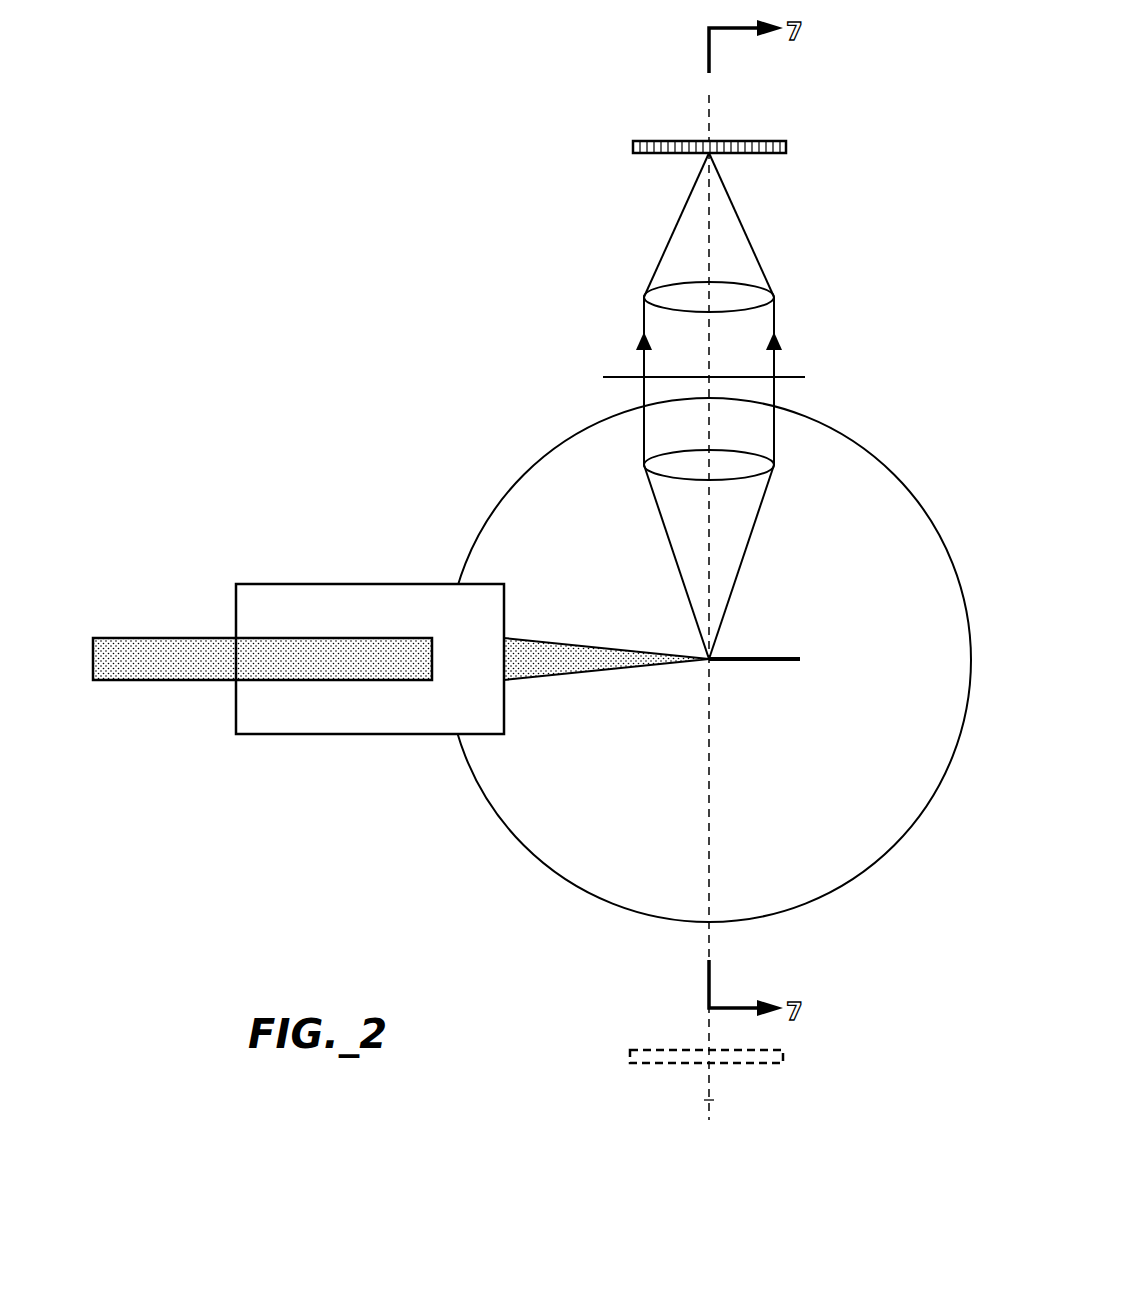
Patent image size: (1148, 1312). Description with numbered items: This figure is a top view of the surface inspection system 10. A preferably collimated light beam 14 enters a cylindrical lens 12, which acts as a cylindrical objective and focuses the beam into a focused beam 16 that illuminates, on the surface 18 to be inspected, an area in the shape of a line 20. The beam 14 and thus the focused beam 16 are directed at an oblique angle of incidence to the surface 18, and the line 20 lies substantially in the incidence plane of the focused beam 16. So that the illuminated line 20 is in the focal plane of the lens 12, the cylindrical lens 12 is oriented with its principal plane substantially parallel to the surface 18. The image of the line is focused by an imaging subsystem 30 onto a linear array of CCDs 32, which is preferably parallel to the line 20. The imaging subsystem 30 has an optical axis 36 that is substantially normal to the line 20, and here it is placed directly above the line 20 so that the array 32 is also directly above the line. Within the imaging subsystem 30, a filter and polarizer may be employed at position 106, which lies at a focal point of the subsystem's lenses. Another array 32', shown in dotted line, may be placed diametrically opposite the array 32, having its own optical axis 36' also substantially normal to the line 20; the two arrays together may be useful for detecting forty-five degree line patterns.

The surface inspection system 10 is at (452, 236).
The cylindrical lens 12 is at (372, 736).
The collimated light beam 14 is at (187, 638).
The focused beam 16 is at (553, 681).
The surface 18 is at (813, 888).
The line 20 is at (773, 658).
The imaging subsystem 30 is at (807, 320).
The linear array of CCDs 32 is at (739, 132).
The optical axis 36 is at (724, 607).
The filter and polarizer position 106 is at (797, 376).
The another array 32' is at (730, 1079).
The optical axis 36' is at (740, 1121).